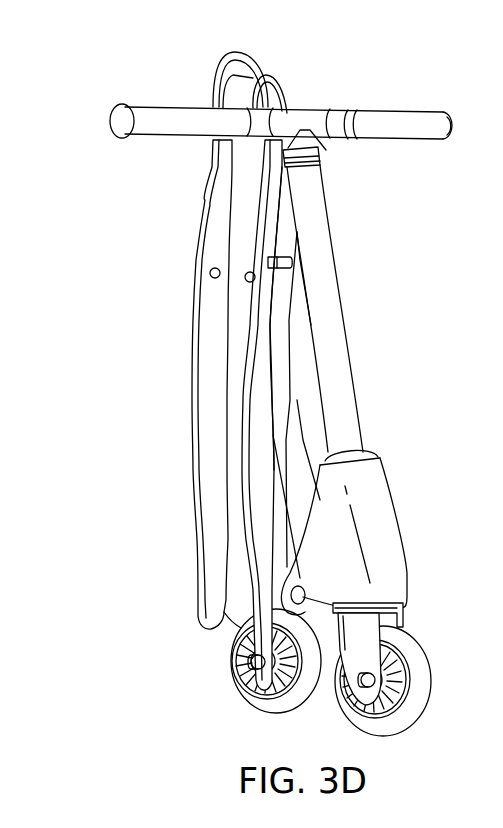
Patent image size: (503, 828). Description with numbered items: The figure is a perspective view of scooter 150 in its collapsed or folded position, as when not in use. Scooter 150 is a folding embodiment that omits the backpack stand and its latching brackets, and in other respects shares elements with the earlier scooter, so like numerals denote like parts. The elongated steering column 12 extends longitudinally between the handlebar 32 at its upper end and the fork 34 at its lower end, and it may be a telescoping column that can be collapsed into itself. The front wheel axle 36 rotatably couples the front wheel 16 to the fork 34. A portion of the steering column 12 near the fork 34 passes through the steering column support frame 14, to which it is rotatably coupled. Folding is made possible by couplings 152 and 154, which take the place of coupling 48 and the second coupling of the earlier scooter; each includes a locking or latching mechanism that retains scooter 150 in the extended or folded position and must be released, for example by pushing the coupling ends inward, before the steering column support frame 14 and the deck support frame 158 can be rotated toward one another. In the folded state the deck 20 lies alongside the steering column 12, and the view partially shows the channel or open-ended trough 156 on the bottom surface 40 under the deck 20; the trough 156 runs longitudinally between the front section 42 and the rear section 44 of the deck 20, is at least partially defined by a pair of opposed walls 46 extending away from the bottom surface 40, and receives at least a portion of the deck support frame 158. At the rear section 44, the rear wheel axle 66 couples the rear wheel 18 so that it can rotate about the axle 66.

The steering column 12 is at (337, 270).
The steering column support frame 14 is at (367, 478).
The front wheel 16 is at (413, 717).
The rear wheel 18 is at (257, 704).
The deck 20 is at (160, 354).
The handlebar 32 is at (153, 107).
The fork 34 is at (403, 607).
The front wheel axle 36 is at (360, 698).
The bottom surface 40 is at (212, 405).
The front section 42 is at (215, 66).
The rear section 44 is at (197, 622).
The opposed walls 46 is at (298, 350).
The coupling 48 is at (245, 245).
The rear wheel axle 66 is at (251, 664).
The scooter 150 is at (128, 207).
The coupling 152 is at (305, 592).
The coupling 154 is at (245, 279).
The channel or open-ended trough 156 is at (283, 210).
The deck support frame 158 is at (280, 393).